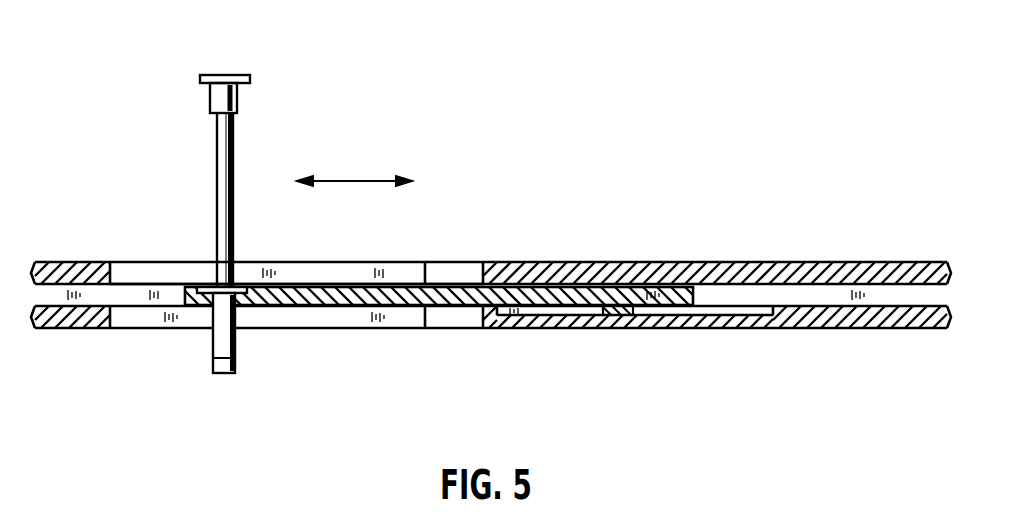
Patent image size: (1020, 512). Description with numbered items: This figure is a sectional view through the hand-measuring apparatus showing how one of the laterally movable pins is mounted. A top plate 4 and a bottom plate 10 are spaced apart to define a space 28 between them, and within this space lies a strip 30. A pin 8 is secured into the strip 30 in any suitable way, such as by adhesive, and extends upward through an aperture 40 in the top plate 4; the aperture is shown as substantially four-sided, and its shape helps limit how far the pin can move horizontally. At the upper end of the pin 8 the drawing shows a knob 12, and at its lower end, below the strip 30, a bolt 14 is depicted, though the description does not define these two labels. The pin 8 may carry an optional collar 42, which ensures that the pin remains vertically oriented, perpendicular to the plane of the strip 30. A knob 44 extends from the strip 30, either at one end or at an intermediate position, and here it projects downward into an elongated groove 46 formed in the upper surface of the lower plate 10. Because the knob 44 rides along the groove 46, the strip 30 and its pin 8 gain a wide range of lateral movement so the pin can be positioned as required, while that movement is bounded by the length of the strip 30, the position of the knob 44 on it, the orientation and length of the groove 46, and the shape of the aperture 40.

The top plate 4 is at (810, 263).
The bottom plate 10 is at (815, 316).
The pin 8 is at (233, 230).
The knob 12 is at (213, 77).
The bolt 14 is at (222, 374).
The space 28 is at (123, 296).
The strip 30 is at (438, 300).
The aperture 40 is at (345, 270).
The collar 42 is at (202, 303).
The knob 44 is at (630, 317).
The elongated groove 46 is at (732, 314).